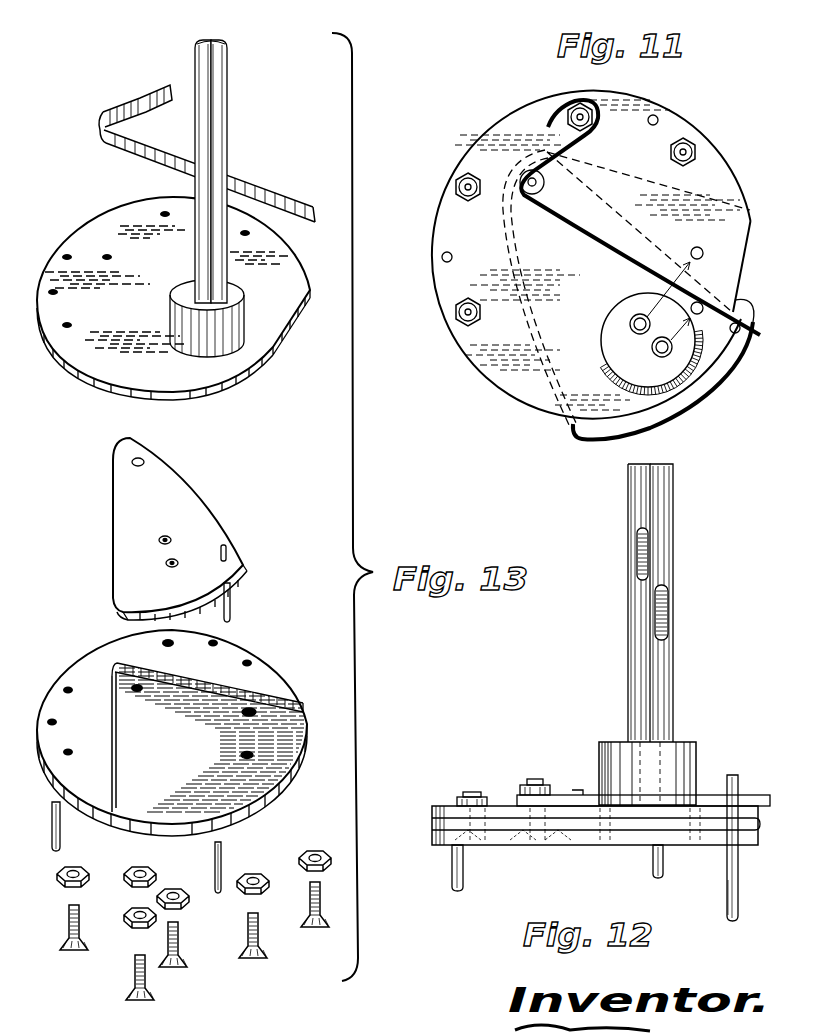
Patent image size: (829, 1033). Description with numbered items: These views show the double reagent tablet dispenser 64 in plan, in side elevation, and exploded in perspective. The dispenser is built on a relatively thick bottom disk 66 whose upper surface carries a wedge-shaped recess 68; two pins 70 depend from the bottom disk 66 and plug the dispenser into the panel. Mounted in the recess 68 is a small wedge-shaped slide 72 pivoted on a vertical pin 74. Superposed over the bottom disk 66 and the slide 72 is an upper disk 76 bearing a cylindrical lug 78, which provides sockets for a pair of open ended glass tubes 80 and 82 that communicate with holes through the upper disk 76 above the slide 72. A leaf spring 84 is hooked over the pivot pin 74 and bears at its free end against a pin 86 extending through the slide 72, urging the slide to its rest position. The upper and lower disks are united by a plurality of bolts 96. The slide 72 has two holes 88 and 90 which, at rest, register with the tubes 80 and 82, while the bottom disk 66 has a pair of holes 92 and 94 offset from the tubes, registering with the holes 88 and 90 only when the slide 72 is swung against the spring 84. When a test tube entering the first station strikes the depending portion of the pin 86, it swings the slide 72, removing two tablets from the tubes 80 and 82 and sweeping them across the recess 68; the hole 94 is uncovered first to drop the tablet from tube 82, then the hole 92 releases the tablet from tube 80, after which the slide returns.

In FIG. 12, the double reagent tablet dispenser 64 is at (590, 692).
In FIG. 13, the bottom disk 66 is at (90, 650).
In FIG. 12, the bottom disk 66 is at (433, 838).
In FIG. 13, the wedge-shaped recess 68 is at (210, 683).
In FIG. 13, the pins 70 is at (61, 839).
In FIG. 12, the pins 70 is at (464, 876).
In FIG. 13, the wedge-shaped slide 72 is at (204, 498).
In FIG. 11, the wedge-shaped slide 72 is at (566, 432).
In FIG. 12, the wedge-shaped slide 72 is at (758, 832).
In FIG. 13, the vertical pin 74 is at (181, 935).
In FIG. 11, the vertical pin 74 is at (544, 187).
In FIG. 12, the vertical pin 74 is at (537, 785).
In FIG. 13, the upper disk 76 is at (104, 216).
In FIG. 12, the upper disk 76 is at (704, 808).
In FIG. 13, the cylindrical lug 78 is at (244, 312).
In FIG. 12, the cylindrical lug 78 is at (697, 755).
In FIG. 13, the glass tube 80 is at (195, 54).
In FIG. 11, the glass tube 80 is at (634, 333).
In FIG. 12, the glass tube 80 is at (628, 496).
In FIG. 13, the glass tube 82 is at (227, 83).
In FIG. 11, the glass tube 82 is at (656, 356).
In FIG. 12, the glass tube 82 is at (673, 530).
In FIG. 13, the leaf spring 84 is at (269, 196).
In FIG. 11, the leaf spring 84 is at (592, 242).
In FIG. 12, the leaf spring 84 is at (745, 800).
In FIG. 13, the pin 86 is at (232, 600).
In FIG. 11, the pin 86 is at (740, 334).
In FIG. 12, the pin 86 is at (739, 896).
In FIG. 13, the hole 88 is at (158, 540).
In FIG. 13, the hole 90 is at (165, 563).
In FIG. 13, the hole 92 is at (242, 713).
In FIG. 13, the hole 94 is at (242, 756).
In FIG. 13, the bolts 96 is at (68, 918).
In FIG. 11, the bolts 96 is at (671, 152).